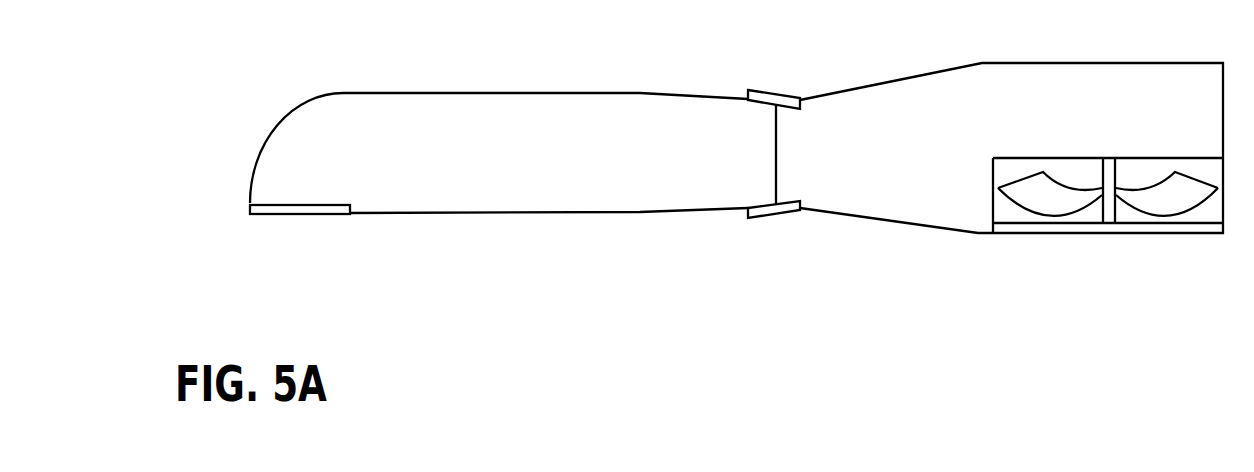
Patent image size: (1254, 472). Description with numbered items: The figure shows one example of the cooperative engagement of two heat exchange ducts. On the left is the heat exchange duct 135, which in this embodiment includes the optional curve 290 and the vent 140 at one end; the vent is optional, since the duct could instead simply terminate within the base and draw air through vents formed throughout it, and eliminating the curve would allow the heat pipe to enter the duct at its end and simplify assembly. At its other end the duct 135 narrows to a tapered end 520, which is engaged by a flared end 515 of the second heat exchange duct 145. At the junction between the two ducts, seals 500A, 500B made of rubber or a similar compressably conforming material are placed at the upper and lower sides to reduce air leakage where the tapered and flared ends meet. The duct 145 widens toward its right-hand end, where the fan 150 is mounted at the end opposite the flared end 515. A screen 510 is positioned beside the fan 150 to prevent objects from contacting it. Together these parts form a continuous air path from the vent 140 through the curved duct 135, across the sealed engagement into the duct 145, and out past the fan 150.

The heat exchange duct 135 is at (545, 122).
The vent 140 is at (297, 224).
The heat exchange duct 145 is at (1011, 148).
The fan 150 is at (986, 198).
The curve 290 is at (277, 117).
The seal 500A is at (777, 85).
The seal 500B is at (776, 226).
The screen 510 is at (1033, 230).
The flared end 515 is at (788, 85).
The tapered end 520 is at (706, 218).